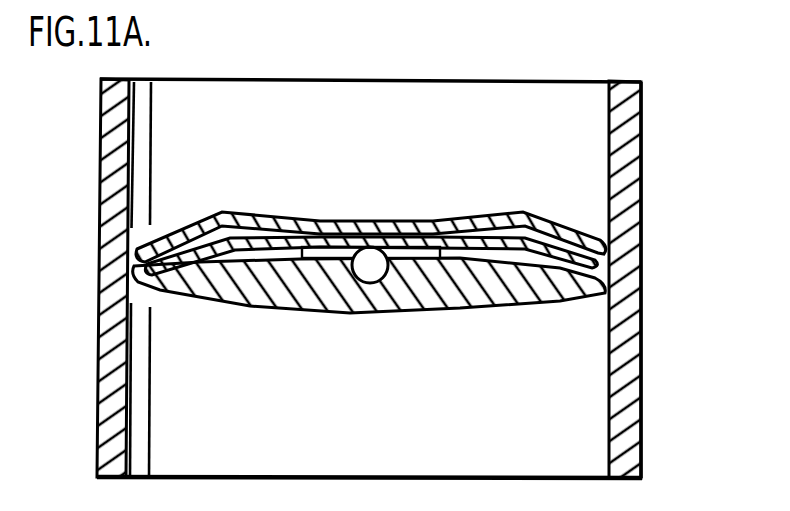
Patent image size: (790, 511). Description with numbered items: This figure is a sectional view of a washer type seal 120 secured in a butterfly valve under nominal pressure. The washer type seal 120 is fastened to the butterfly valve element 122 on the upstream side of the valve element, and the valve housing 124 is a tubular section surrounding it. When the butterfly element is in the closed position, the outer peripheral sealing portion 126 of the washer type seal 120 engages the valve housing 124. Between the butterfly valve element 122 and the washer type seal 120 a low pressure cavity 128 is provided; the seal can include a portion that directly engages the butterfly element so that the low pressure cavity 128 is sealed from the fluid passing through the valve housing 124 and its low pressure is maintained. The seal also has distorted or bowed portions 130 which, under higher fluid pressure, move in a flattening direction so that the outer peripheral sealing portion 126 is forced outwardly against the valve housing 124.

The washer type seal 120 is at (526, 206).
The butterfly valve element 122 is at (512, 318).
The valve housing 124 is at (630, 290).
The outer peripheral sealing portion 126 is at (643, 245).
The low pressure cavity 128 is at (220, 257).
The distorted or bowed portions 130 is at (543, 228).